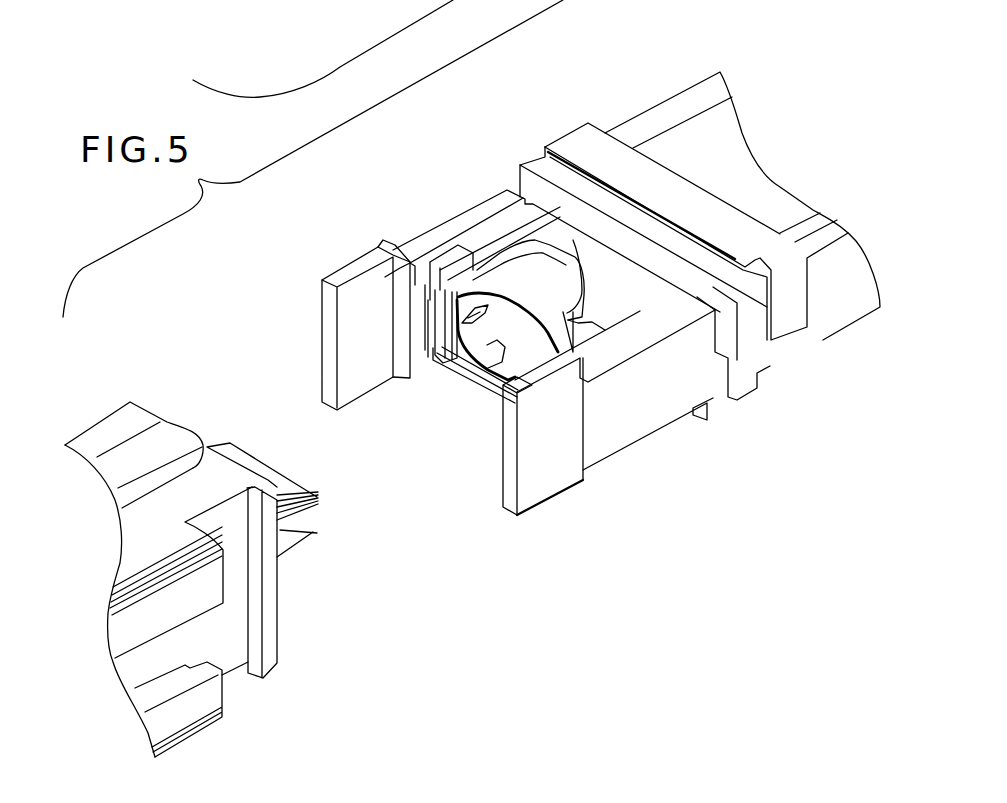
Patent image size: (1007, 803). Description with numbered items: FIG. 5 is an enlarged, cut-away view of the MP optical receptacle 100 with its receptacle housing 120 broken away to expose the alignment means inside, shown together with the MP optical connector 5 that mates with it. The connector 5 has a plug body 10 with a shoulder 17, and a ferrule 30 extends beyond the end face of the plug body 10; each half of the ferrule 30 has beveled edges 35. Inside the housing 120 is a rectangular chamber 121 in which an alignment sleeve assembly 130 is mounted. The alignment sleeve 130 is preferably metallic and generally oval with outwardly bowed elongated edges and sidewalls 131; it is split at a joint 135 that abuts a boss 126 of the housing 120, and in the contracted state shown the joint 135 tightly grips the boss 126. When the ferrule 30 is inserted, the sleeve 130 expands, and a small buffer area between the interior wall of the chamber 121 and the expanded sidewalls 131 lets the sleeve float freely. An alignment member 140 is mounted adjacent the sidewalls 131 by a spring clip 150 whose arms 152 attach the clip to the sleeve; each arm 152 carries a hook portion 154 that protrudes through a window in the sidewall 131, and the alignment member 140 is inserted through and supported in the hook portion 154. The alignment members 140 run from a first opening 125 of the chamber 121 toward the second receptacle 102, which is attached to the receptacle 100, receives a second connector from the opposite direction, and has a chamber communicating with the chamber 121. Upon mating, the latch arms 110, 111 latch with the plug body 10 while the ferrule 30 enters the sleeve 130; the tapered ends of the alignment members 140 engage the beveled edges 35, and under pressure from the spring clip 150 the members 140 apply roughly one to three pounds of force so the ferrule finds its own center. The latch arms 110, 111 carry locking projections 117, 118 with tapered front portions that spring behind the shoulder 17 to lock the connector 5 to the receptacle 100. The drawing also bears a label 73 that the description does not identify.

The MP optical connector 5 is at (300, 665).
The plug body 10 is at (137, 420).
The shoulder 17 is at (268, 587).
The ferrule 30 is at (260, 467).
The beveled edges 35 is at (297, 530).
The frame member 73 is at (234, 8).
The MP optical receptacle 100 is at (494, 163).
The second receptacle 102 is at (633, 99).
The latch arm 110 is at (527, 447).
The latch arm 111 is at (322, 332).
The locking projection 117 is at (382, 287).
The locking projection 118 is at (544, 362).
The receptacle housing 120 is at (670, 313).
The rectangular chamber 121 is at (440, 372).
The first opening 125 is at (438, 292).
The boss 126 is at (495, 352).
The alignment sleeve assembly 130 is at (490, 312).
The sidewalls 131 is at (455, 298).
The joint 135 is at (497, 375).
The alignment member 140 is at (465, 297).
The spring clip 150 is at (575, 292).
The arms 152 is at (633, 283).
The hook portion 154 is at (515, 310).